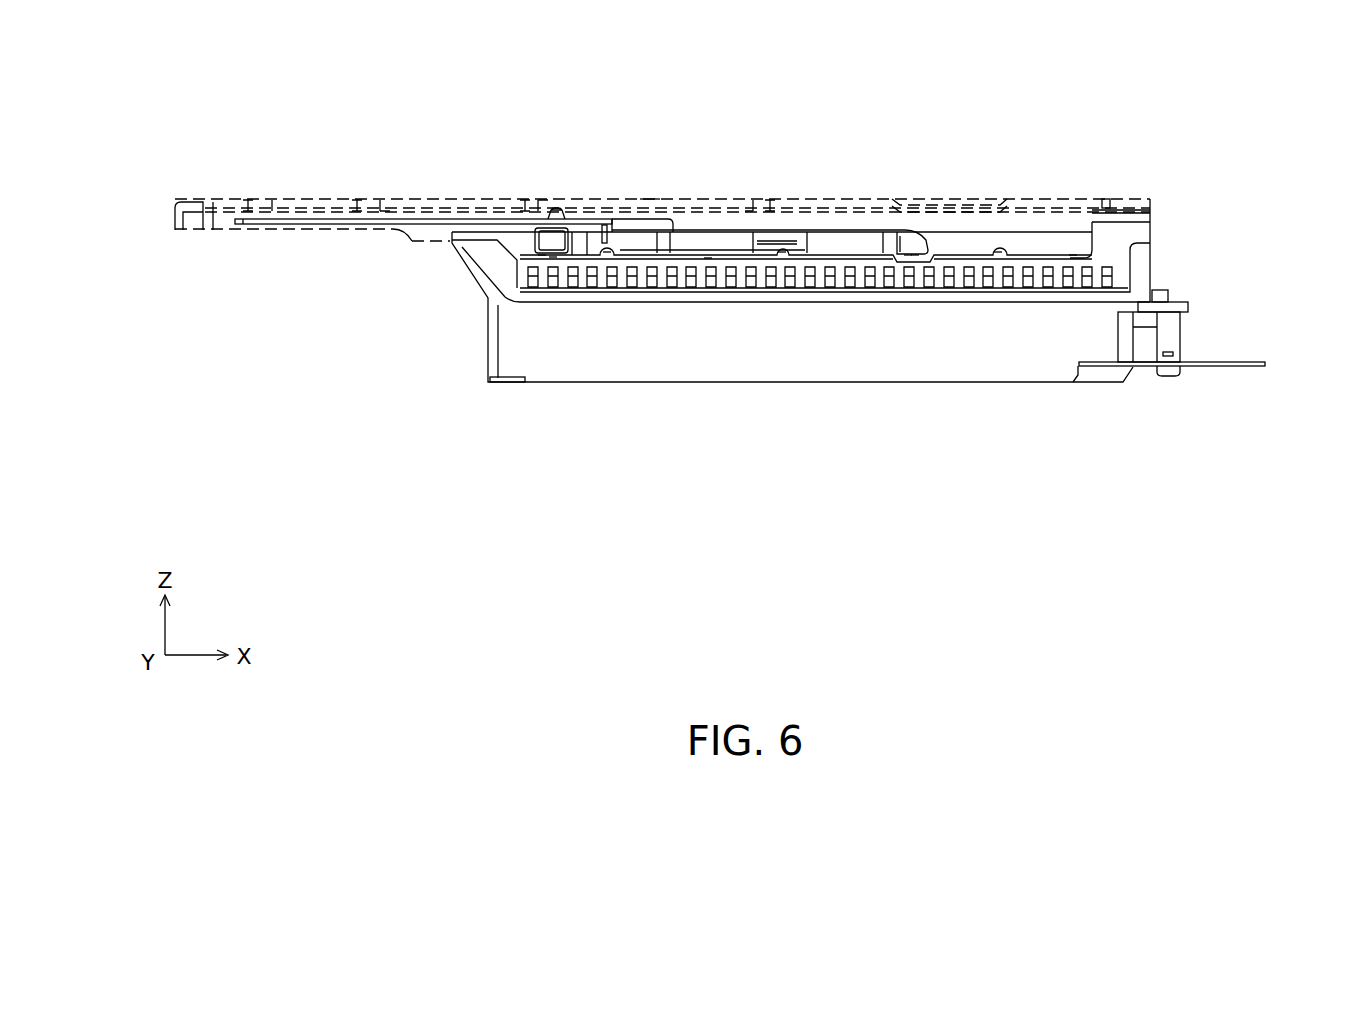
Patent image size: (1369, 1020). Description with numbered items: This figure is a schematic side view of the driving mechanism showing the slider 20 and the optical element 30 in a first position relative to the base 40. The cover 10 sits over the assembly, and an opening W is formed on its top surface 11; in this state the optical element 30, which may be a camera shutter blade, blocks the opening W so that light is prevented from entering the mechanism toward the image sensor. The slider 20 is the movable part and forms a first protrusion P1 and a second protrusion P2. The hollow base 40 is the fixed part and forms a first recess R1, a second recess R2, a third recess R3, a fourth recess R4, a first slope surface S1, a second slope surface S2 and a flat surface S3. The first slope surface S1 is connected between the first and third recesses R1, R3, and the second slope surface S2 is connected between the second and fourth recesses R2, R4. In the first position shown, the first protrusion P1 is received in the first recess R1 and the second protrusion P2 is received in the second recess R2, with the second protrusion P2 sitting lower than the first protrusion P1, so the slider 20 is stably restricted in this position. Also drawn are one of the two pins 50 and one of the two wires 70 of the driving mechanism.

The cover 10 is at (1058, 195).
The top surface 11 is at (648, 195).
The slider 20 is at (845, 226).
The optical element 30 is at (312, 234).
The base 40 is at (484, 334).
The pin 50 is at (1176, 330).
The wire 70 is at (1235, 368).
The opening W is at (315, 195).
The first protrusion P1 is at (908, 256).
The second protrusion P2 is at (542, 256).
The first recess R1 is at (915, 256).
The second recess R2 is at (553, 258).
The third recess R3 is at (1073, 256).
The fourth recess R4 is at (708, 258).
The first slope surface S1 is at (998, 252).
The second slope surface S2 is at (607, 252).
The flat surface S3 is at (782, 252).